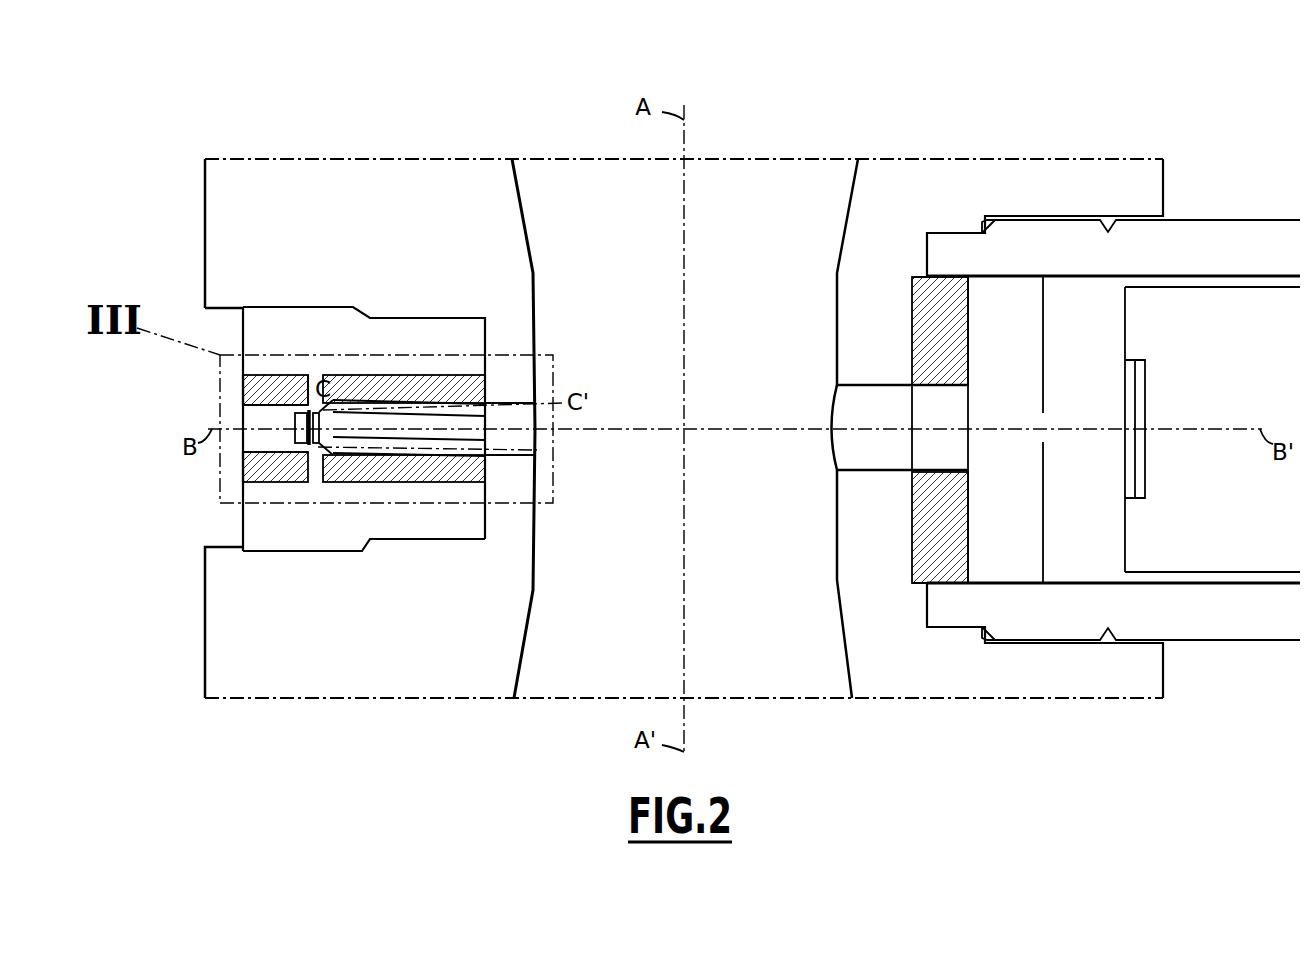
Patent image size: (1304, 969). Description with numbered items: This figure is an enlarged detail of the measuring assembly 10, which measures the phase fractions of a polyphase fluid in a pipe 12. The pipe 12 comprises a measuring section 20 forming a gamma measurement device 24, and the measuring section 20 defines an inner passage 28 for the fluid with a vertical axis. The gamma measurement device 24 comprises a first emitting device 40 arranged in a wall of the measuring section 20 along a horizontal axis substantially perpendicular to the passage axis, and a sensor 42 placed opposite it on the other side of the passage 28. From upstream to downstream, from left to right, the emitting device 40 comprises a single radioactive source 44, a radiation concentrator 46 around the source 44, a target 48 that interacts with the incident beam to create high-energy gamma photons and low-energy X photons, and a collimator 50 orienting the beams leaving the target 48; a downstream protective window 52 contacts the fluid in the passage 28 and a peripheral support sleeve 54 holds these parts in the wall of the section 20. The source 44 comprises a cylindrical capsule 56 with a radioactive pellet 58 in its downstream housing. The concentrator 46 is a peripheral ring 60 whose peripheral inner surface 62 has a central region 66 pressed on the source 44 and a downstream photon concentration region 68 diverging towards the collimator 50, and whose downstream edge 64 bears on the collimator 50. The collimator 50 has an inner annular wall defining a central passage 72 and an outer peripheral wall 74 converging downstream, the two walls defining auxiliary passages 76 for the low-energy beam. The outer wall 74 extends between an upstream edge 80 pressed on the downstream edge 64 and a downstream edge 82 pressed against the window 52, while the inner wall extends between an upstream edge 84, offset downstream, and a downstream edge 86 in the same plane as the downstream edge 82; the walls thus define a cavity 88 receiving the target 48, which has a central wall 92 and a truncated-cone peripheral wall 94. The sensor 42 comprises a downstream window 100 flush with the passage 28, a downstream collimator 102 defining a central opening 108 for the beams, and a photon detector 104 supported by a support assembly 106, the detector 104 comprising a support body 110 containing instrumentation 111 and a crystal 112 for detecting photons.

The measuring assembly 10 is at (332, 148).
The pipe 12 is at (1103, 190).
The measuring section 20 is at (228, 200).
The gamma measurement device 24 is at (183, 320).
The inner passage 28 is at (772, 297).
The first emitting device 40 is at (423, 210).
The sensor 42 is at (1003, 205).
The radioactive source 44 is at (237, 468).
The radiation concentrator 46 is at (240, 382).
The target 48 is at (333, 407).
The collimator 50 is at (419, 377).
The downstream protective window 52 is at (520, 403).
The peripheral support sleeve 54 is at (300, 535).
The cylindrical capsule 56 is at (247, 422).
The radioactive pellet 58 is at (310, 452).
The peripheral ring 60 is at (265, 390).
The peripheral inner surface 62 is at (258, 396).
The downstream edge 64 is at (313, 380).
The central region 66 is at (290, 383).
The downstream photon concentration region 68 is at (313, 470).
The central passage 72 is at (475, 408).
The outer peripheral wall 74 is at (398, 378).
The auxiliary passages 76 is at (455, 398).
The upstream edge 80 is at (300, 482).
The downstream edge 82 is at (480, 468).
The upstream edge 84 is at (330, 456).
The downstream edge 86 is at (500, 418).
The cavity 88 is at (293, 415).
The central wall 92 is at (342, 458).
The peripheral wall 94 is at (320, 450).
The downstream window 100 is at (860, 458).
The downstream collimator 102 is at (917, 568).
The photon detector 104 is at (1125, 325).
The support assembly 106 is at (1218, 232).
The central opening 108 is at (947, 384).
The support body 110 is at (1205, 562).
The instrumentation 111 is at (1212, 429).
The crystal 112 is at (1145, 490).